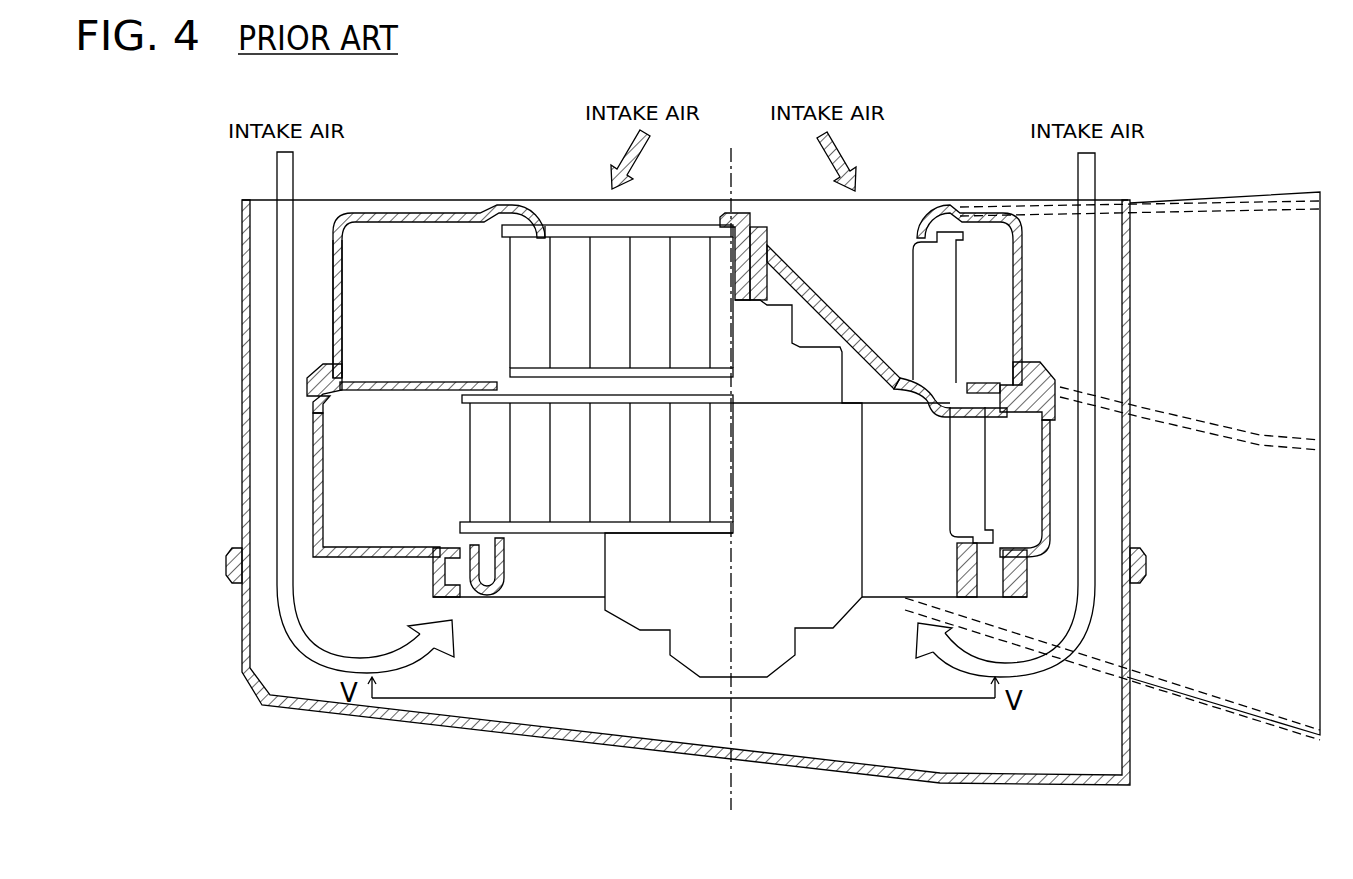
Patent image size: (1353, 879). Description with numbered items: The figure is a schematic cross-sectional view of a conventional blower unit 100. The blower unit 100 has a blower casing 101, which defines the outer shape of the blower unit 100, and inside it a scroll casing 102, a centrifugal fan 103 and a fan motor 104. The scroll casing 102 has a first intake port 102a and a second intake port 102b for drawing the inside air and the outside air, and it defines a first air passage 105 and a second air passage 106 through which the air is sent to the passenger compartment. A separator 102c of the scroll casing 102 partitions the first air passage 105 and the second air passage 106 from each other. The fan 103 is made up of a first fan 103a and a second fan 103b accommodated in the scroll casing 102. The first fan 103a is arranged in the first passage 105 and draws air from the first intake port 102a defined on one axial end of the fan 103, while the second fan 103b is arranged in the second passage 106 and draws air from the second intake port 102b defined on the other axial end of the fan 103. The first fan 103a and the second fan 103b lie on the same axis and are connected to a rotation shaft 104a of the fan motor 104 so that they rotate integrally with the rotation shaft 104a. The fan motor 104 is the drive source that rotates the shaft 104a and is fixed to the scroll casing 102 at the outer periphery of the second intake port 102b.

The blower unit 100 is at (187, 190).
The blower casing 101 is at (240, 520).
The scroll casing 102 is at (333, 268).
The first intake port 102a is at (686, 215).
The second intake port 102b is at (540, 540).
The separator 102c is at (378, 378).
The centrifugal fan 103 is at (545, 141).
The first fan 103a is at (510, 308).
The second fan 103b is at (462, 468).
The fan motor 104 is at (833, 630).
The rotation shaft 104a is at (750, 213).
The first air passage 105 is at (380, 248).
The second air passage 106 is at (340, 443).